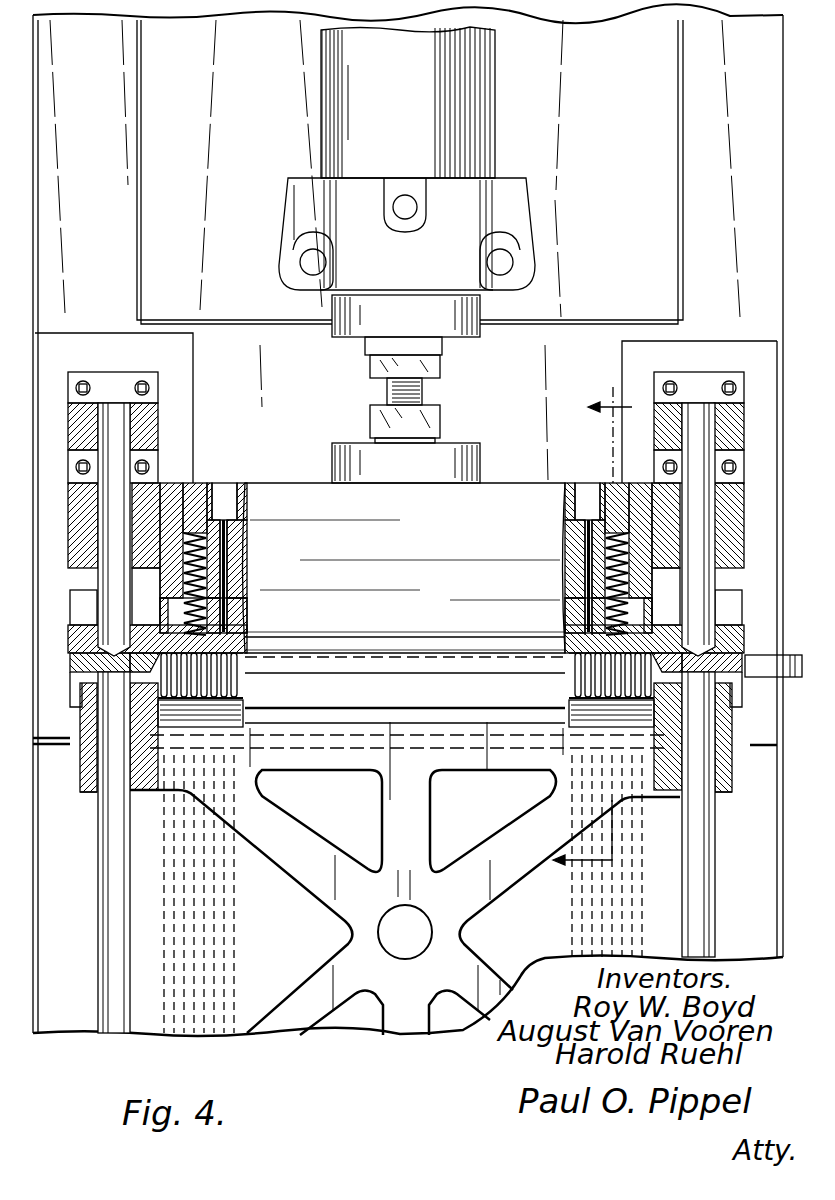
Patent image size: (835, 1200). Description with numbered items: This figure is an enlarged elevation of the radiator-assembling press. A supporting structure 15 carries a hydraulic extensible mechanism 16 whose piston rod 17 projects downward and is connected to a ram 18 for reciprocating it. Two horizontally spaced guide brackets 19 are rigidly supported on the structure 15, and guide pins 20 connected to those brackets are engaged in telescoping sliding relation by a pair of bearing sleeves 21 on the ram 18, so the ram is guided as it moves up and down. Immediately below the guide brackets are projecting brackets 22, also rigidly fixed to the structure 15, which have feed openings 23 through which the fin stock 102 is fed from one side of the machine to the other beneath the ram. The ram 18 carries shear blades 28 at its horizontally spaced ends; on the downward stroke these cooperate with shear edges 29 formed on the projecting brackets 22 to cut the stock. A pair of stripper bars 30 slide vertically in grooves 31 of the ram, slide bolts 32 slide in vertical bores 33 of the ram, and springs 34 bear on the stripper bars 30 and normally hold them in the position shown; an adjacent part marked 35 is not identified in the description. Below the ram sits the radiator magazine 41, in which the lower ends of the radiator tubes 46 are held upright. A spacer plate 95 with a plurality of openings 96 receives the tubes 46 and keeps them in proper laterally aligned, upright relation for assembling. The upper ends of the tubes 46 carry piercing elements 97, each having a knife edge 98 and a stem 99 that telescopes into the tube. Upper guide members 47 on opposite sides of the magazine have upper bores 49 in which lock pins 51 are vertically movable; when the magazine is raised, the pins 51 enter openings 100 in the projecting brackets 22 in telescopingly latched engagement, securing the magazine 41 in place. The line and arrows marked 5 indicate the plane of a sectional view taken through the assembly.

The section line 5- 5 is at (592, 638).
The supporting structure 15 is at (762, 108).
The hydraulic extensible mechanism 16 is at (496, 77).
The piston rod 17 is at (423, 393).
The ram 18 is at (272, 488).
The guide brackets 19 is at (95, 372).
The guide pins 20 is at (112, 413).
The bearing sleeves 21 is at (147, 497).
The projecting brackets 22 is at (72, 640).
The feed openings 23 is at (70, 653).
The shear blades 28 is at (157, 613).
The shear edges 29 is at (150, 720).
The stripper bars 30 is at (243, 636).
The grooves 31 is at (240, 605).
The slide bolts 32 is at (240, 530).
The vertical bores 33 is at (245, 562).
The springs 34 is at (192, 540).
The plate 35 is at (245, 650).
The radiator magazine 41 is at (397, 862).
The radiator tubes 46 is at (135, 730).
The upper guide members 47 is at (92, 793).
The upper bores 49 is at (97, 758).
The lock pins 51 is at (102, 833).
The spacer plate 95 is at (200, 752).
The openings 96 is at (243, 733).
The piercing elements 97 is at (243, 665).
The knife edges 98 is at (133, 650).
The stems 99 is at (237, 694).
The openings 100 is at (83, 688).
The fin stock 102 is at (668, 728).